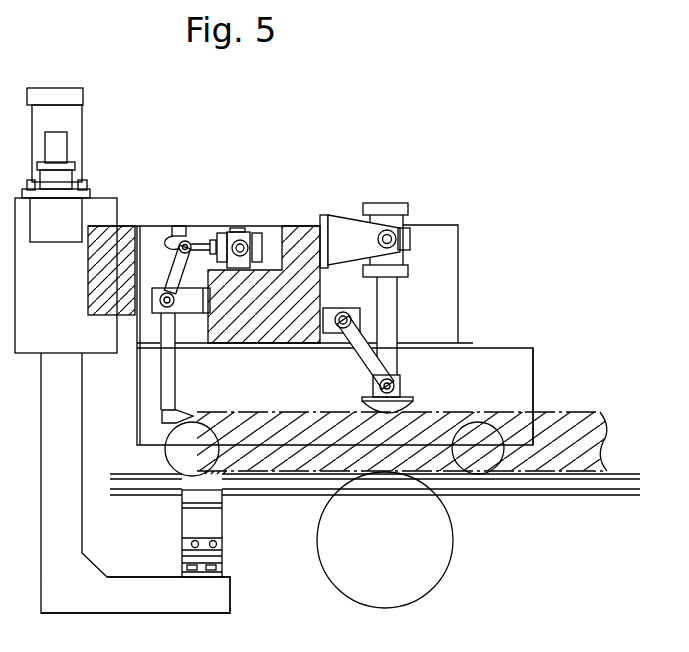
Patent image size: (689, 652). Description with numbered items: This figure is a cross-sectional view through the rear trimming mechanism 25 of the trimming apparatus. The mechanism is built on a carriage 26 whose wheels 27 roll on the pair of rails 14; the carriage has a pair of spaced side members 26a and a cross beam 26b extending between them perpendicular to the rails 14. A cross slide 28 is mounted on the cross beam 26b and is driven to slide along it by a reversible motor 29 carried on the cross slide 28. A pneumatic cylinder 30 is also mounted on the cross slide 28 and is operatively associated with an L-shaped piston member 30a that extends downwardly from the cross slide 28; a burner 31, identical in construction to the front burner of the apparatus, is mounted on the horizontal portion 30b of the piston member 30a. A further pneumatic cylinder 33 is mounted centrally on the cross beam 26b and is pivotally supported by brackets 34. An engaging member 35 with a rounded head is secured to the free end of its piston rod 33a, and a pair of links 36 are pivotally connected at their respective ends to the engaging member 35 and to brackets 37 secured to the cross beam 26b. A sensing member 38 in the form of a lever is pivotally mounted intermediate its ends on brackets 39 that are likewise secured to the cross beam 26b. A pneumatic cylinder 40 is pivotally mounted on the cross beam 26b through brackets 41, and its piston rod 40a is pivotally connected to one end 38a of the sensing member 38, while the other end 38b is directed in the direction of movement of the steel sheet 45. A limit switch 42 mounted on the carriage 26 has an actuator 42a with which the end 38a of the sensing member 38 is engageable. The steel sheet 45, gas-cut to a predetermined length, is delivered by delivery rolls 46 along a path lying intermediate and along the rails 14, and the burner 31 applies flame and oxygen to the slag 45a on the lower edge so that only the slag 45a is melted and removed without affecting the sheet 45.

The rails 14 is at (572, 497).
The rear trimming mechanism 25 is at (417, 212).
The carriage 26 is at (503, 360).
The side members 26a is at (537, 378).
The cross beam 26b is at (125, 230).
The wheels 27 is at (175, 458).
The cross slide 28 is at (102, 203).
The reversible motor 29 is at (62, 143).
The pneumatic cylinder 30 is at (83, 96).
The L-shaped piston member 30a is at (83, 440).
The horizontal portion 30b is at (160, 602).
The burner 31 is at (210, 525).
The pneumatic cylinder 33 is at (387, 203).
The piston rod 33a is at (397, 312).
The brackets 34 is at (338, 225).
The engaging member 35 is at (413, 398).
The links 36 is at (356, 355).
The brackets 37 is at (337, 310).
The sensing member 38 is at (167, 325).
The end of sensing member 38a is at (180, 255).
The other end of sensing member 38b is at (180, 410).
The brackets 39 is at (153, 290).
The pneumatic cylinder 40 is at (262, 235).
The piston rod 40a is at (205, 245).
The brackets 41 is at (238, 233).
The limit switch 42 is at (180, 226).
The actuator 42a is at (165, 230).
The steel sheet 45 is at (583, 428).
The slag 45a is at (222, 478).
The delivery rolls 46 is at (443, 580).